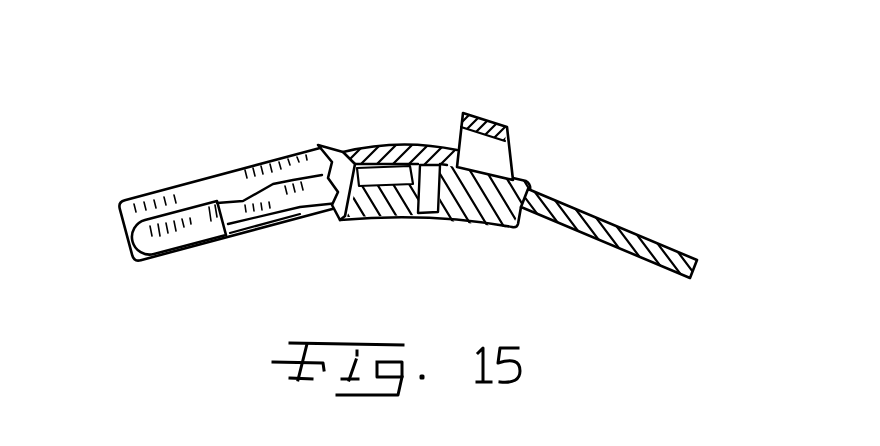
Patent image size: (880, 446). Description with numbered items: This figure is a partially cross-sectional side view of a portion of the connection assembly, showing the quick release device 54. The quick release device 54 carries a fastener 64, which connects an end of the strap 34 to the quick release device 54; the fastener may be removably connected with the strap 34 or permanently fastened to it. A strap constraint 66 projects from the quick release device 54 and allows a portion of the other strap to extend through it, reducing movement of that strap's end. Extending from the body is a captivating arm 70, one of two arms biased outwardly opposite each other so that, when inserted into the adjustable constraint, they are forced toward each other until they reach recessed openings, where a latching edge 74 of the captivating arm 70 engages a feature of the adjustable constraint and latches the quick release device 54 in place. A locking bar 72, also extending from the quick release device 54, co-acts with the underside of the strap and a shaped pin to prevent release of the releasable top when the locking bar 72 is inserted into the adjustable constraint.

The strap 34 is at (660, 238).
The quick release device 54 is at (366, 100).
The fastener 64 is at (410, 219).
The strap constraint 66 is at (503, 127).
The captivating arm 70 is at (135, 234).
The locking bar 72 is at (190, 183).
The latching edge 74 is at (242, 236).